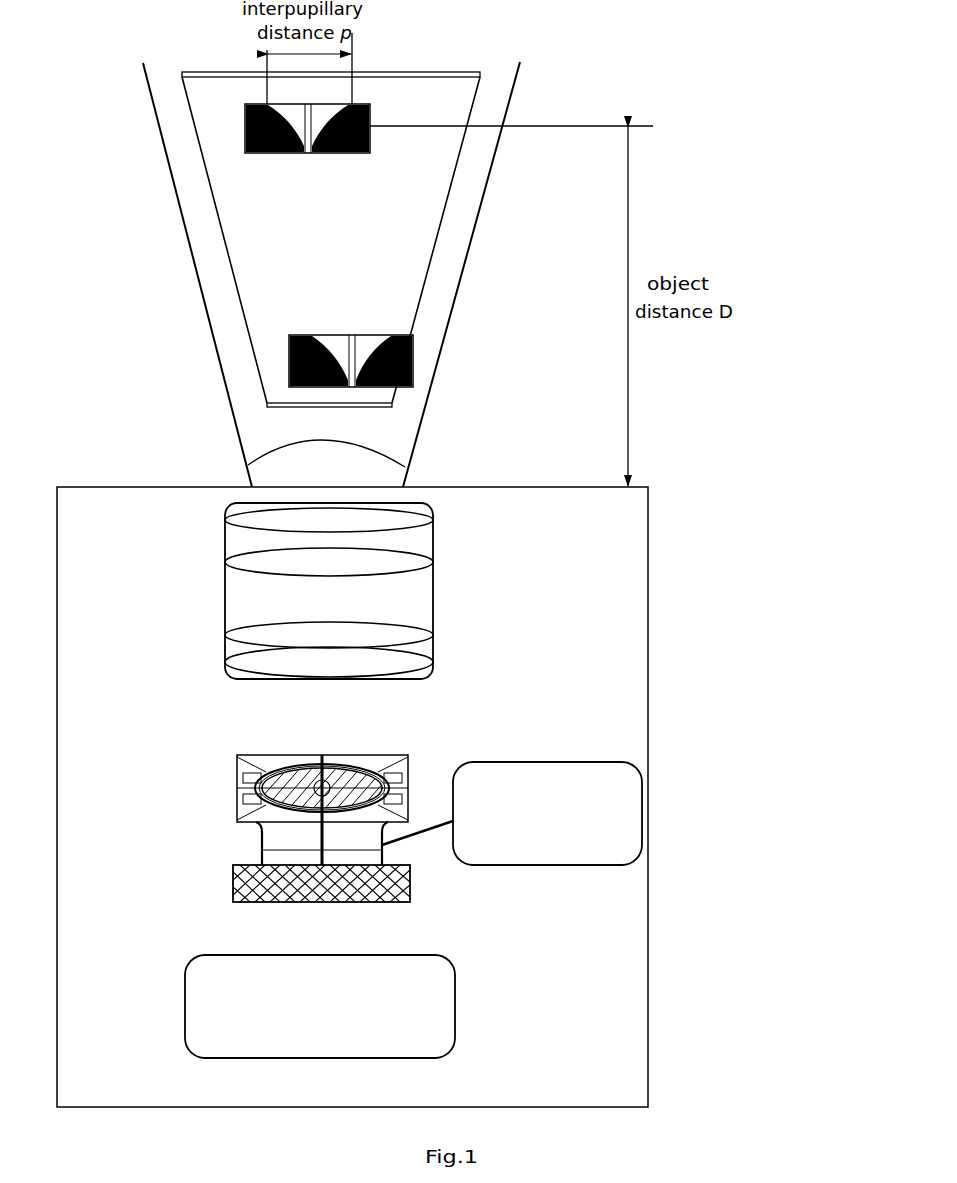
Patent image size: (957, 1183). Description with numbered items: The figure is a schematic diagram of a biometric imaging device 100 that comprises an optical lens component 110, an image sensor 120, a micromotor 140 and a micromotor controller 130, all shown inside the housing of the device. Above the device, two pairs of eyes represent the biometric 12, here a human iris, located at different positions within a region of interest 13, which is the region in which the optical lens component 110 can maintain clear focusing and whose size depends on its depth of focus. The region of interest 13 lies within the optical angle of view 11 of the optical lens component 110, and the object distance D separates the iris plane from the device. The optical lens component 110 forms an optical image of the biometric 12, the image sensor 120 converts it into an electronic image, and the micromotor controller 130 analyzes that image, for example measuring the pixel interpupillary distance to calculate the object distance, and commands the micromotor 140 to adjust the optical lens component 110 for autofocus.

The optical angle of view 11 is at (390, 458).
The biometric (iris) 12 is at (247, 150).
The region of interest 13 is at (452, 174).
The biometric imaging device 100 is at (649, 650).
The optical lens component 110 is at (338, 609).
The image sensor 120 is at (320, 1006).
The micromotor controller 130 is at (512, 813).
The micromotor 140 is at (321, 847).